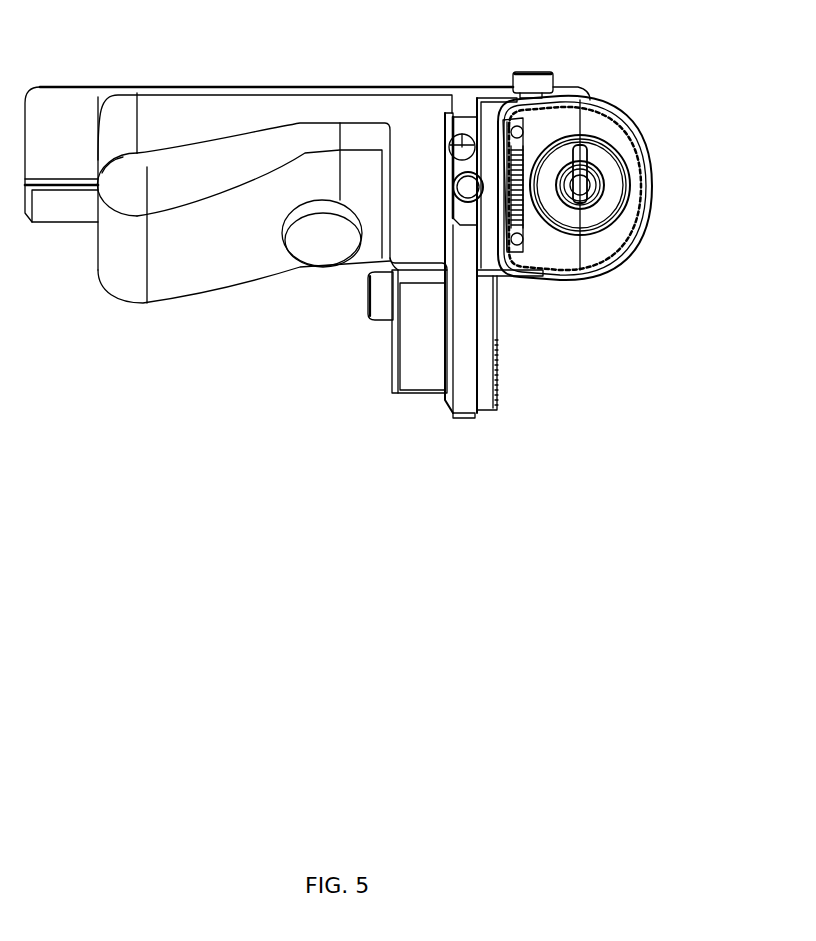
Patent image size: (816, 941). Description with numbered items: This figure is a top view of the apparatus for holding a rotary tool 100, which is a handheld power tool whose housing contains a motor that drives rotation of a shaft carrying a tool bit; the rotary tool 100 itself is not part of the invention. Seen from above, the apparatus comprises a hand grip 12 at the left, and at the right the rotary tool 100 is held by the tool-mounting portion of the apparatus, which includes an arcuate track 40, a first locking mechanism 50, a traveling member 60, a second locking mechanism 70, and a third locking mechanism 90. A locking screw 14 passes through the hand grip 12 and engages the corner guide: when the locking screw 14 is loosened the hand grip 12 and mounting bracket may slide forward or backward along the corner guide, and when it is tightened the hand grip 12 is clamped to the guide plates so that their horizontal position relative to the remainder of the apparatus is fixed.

The hand grip 12 is at (172, 306).
The locking screw 14 is at (283, 240).
The arcuate track 40 is at (467, 420).
The first locking mechanism 50 is at (368, 312).
The traveling member 60 is at (518, 278).
The second locking mechanism 70 is at (453, 186).
The third locking mechanism 90 is at (533, 68).
The rotary tool 100 is at (652, 167).